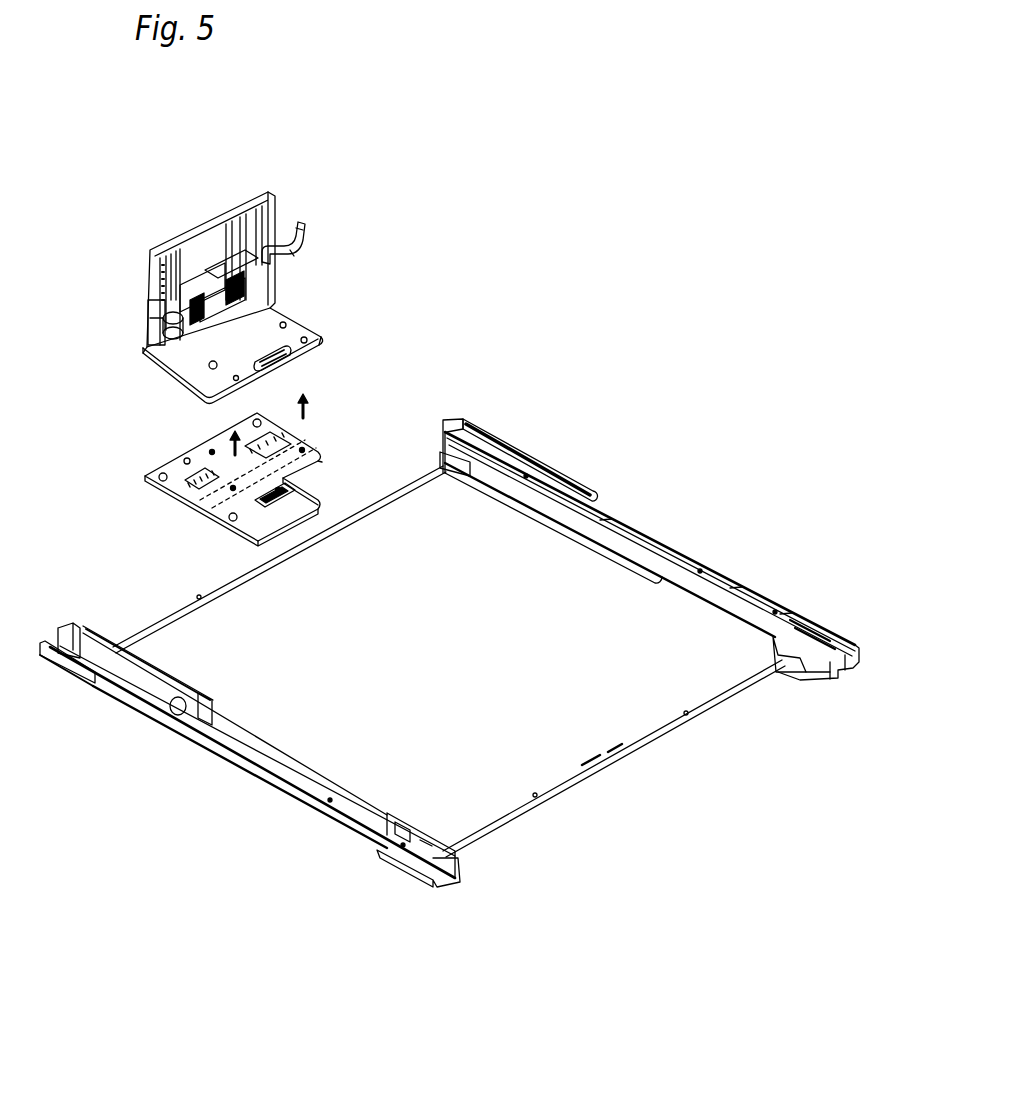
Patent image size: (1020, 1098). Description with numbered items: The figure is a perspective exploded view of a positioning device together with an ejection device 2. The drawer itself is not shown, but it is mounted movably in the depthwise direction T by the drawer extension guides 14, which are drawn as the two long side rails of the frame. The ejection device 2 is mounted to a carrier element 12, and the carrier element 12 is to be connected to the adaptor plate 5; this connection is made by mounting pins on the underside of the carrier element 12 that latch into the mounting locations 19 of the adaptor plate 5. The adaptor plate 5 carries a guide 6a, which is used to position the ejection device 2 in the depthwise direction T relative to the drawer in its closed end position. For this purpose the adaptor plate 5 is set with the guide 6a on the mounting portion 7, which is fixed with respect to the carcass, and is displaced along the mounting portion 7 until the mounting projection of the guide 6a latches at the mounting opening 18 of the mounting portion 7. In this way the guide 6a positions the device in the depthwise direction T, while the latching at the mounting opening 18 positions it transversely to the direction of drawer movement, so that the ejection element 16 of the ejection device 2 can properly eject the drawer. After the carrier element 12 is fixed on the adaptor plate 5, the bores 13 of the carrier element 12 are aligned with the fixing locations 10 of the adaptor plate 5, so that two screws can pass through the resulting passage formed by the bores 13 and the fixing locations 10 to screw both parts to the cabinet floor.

The ejection device 2 is at (242, 272).
The carrier element 12 is at (210, 245).
The ejection element 16 is at (302, 250).
The bores 13 is at (318, 335).
The mounting locations 19 is at (254, 422).
The fixing locations 10 is at (305, 452).
The adaptor plate 5 is at (293, 503).
The guide 6a is at (205, 454).
The mounting opening 18 is at (197, 594).
The mounting portion 7 is at (138, 632).
The drawer extension guides 14 is at (646, 515).
The depthwise direction T is at (610, 457).